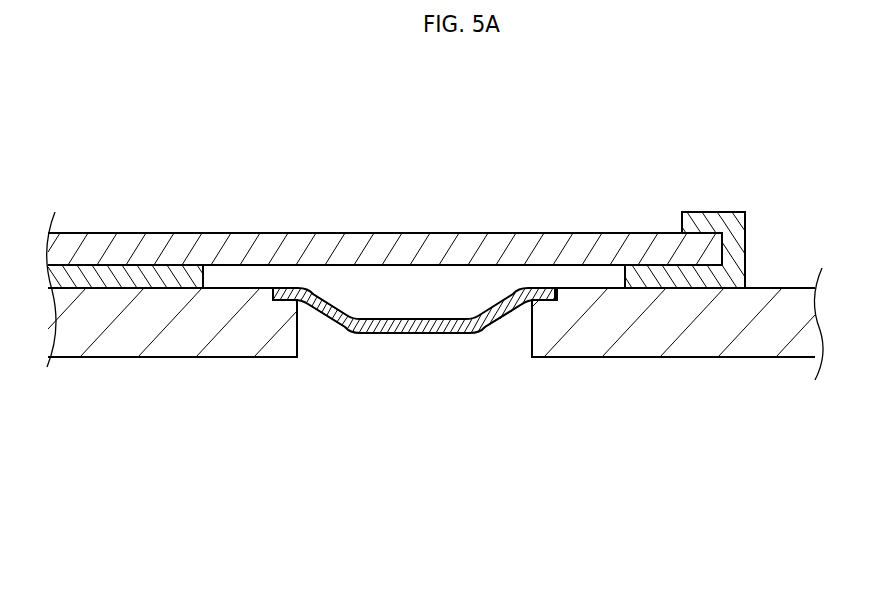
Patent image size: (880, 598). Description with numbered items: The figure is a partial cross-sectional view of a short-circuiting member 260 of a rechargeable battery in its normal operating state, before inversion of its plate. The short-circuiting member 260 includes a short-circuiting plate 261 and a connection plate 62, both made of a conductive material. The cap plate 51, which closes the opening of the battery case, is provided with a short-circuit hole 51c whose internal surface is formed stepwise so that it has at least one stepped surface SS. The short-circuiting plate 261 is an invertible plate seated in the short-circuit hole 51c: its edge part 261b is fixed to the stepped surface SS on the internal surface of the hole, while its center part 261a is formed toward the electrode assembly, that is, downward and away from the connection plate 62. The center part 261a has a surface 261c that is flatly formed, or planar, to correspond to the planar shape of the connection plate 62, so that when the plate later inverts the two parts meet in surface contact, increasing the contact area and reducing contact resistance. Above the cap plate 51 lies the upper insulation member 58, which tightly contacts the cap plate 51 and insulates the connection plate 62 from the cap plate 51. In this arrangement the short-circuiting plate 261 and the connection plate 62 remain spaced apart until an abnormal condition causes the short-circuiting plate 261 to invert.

The short-circuiting member 260 is at (650, 163).
The connection plate 62 is at (280, 233).
The upper insulation member 58 is at (135, 277).
The cap plate 51 is at (697, 337).
The short-circuit hole 51c is at (483, 352).
The short-circuiting plate 261 is at (360, 455).
The center part 261a is at (380, 318).
The edge part 261b is at (290, 288).
The surface 261c is at (453, 320).
The stepped surface SS is at (517, 308).